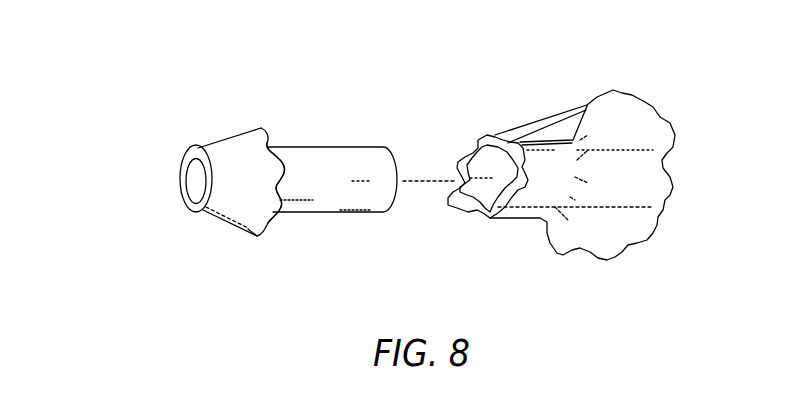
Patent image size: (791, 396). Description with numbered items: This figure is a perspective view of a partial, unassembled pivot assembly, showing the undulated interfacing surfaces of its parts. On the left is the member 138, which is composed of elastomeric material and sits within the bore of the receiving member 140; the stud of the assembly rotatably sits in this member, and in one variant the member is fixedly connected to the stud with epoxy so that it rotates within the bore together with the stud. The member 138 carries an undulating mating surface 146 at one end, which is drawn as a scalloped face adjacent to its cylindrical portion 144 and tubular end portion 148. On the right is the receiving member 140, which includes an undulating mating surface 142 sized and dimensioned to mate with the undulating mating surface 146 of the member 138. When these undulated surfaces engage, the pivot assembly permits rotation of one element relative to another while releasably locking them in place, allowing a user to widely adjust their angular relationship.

The member 138 is at (168, 163).
The receiving member 140 is at (575, 100).
The undulating mating surface 142 is at (485, 134).
The cylindrical shaft 144 is at (358, 146).
The undulating mating surface 146 is at (266, 126).
The nut / collar 148 is at (213, 140).